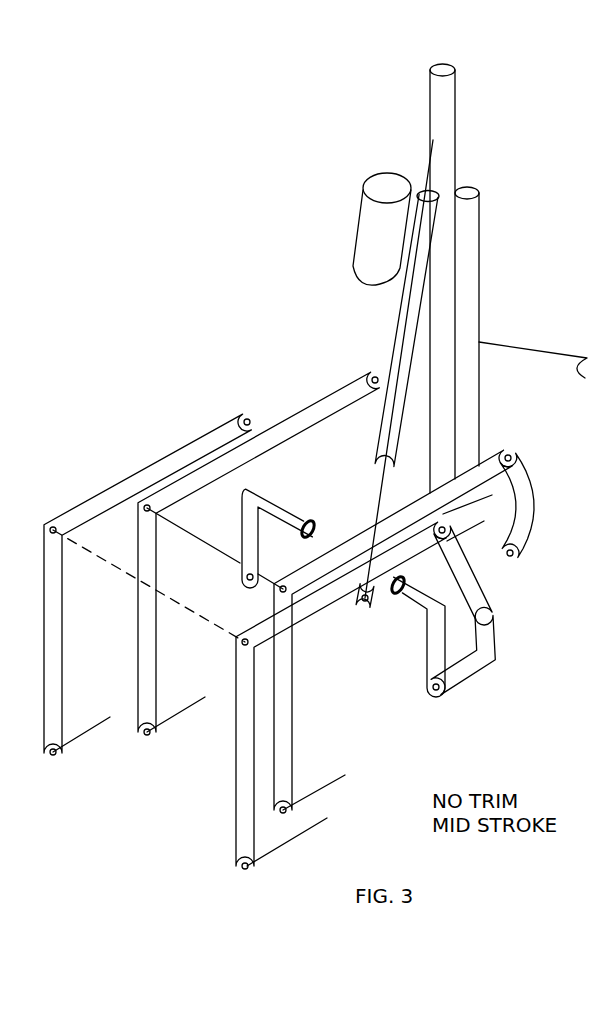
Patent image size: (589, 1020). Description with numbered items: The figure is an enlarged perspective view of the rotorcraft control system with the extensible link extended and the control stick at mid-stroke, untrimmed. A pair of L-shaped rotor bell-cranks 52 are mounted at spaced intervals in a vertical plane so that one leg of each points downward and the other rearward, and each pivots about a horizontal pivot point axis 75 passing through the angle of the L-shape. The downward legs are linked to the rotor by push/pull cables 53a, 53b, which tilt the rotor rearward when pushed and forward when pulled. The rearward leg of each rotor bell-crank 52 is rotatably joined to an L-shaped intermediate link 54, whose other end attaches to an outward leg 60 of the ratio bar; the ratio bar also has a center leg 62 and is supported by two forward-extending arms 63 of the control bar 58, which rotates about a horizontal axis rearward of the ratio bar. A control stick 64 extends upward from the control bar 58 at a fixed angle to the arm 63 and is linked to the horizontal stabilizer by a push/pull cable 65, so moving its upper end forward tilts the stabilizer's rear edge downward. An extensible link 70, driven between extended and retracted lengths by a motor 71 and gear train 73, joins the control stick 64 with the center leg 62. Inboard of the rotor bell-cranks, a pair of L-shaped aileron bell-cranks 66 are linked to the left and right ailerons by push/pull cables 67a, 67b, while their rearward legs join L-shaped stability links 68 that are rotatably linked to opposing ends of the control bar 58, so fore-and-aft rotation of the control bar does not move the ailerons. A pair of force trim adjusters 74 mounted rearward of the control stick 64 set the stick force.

The rotor bell-crank 52 is at (62, 630).
The push/pull cable 53a is at (290, 845).
The push/pull cable 53b is at (95, 730).
The intermediate link 54 is at (472, 665).
The control bar 58 is at (534, 511).
The outward leg 60 is at (242, 540).
The center leg 62 is at (373, 610).
The arm 63 is at (497, 604).
The control stick 64 is at (455, 317).
The push/pull cable 65 is at (560, 352).
The aileron bell-crank 66 is at (137, 705).
The push/pull cable 67a is at (358, 750).
The push/pull cable 67b is at (205, 695).
The stability link 68 is at (520, 470).
The extensible link 70 is at (393, 350).
The motor 71 is at (358, 224).
The gear train 73 is at (400, 305).
The force trim adjuster 74 is at (478, 260).
The pivot point axis 75 is at (167, 593).